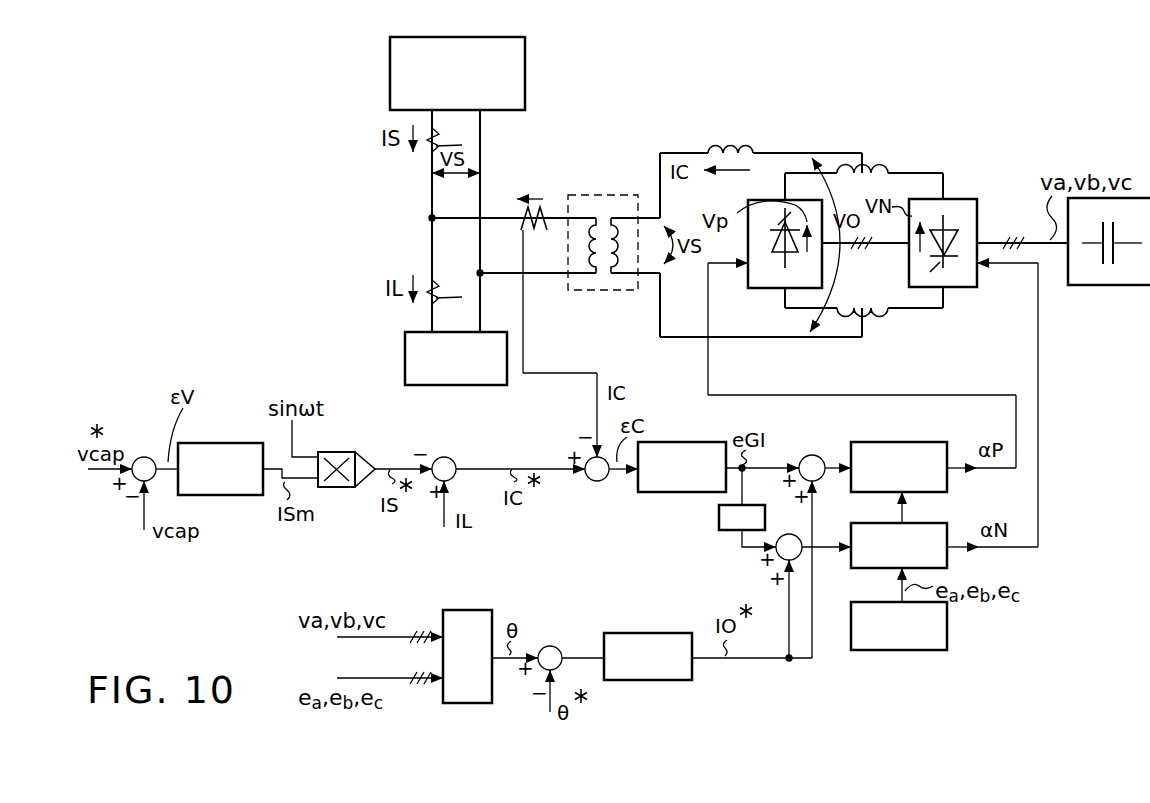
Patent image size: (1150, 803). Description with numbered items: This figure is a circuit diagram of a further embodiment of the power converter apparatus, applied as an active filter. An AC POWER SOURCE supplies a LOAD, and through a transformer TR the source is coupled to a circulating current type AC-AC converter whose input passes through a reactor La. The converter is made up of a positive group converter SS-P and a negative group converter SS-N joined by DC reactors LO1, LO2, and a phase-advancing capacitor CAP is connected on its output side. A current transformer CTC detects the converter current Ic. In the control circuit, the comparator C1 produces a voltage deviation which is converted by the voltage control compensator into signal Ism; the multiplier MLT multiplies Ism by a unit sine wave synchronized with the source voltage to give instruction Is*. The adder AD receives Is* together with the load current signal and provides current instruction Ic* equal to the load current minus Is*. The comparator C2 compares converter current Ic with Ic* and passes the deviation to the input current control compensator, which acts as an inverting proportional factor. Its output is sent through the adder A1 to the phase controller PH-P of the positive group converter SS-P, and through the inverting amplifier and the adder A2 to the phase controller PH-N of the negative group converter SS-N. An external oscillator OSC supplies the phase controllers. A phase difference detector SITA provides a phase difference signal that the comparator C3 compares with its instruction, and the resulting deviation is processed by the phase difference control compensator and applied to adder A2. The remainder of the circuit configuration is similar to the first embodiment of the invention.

The AC power source AC POWER SOURCE is at (457, 73).
The load device LOAD is at (456, 358).
The current transformer CTC is at (550, 209).
The transformer TR is at (603, 230).
The AC reactor La is at (722, 147).
The DC reactor LO1 is at (868, 172).
The DC reactor LO2 is at (864, 314).
The positive group converter SS-P is at (774, 200).
The negative group converter SS-N is at (962, 199).
The phase-advancing capacitor CAP is at (1106, 286).
The comparator C1 is at (141, 456).
The multiplier MLT is at (349, 452).
The adder AD is at (444, 457).
The comparator C2 is at (597, 483).
The adder A1 is at (812, 455).
The adder A2 is at (789, 534).
The phase controller PH-P is at (899, 467).
The phase controller PH-N is at (899, 545).
The external oscillator OSC is at (899, 626).
The phase difference detector SITA is at (468, 610).
The comparator C3 is at (552, 641).